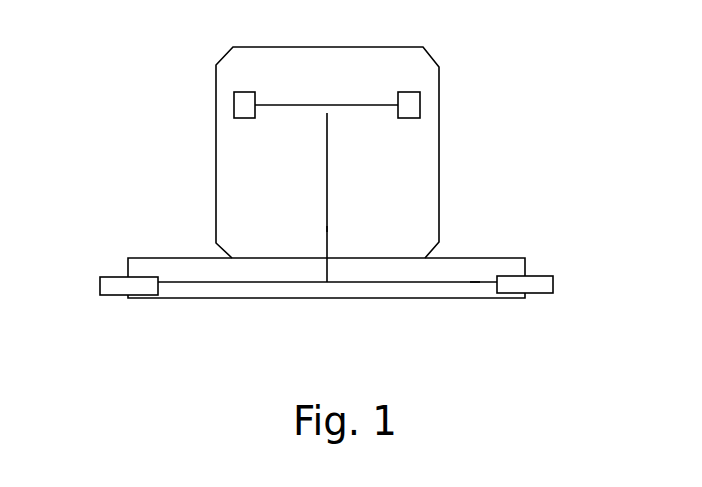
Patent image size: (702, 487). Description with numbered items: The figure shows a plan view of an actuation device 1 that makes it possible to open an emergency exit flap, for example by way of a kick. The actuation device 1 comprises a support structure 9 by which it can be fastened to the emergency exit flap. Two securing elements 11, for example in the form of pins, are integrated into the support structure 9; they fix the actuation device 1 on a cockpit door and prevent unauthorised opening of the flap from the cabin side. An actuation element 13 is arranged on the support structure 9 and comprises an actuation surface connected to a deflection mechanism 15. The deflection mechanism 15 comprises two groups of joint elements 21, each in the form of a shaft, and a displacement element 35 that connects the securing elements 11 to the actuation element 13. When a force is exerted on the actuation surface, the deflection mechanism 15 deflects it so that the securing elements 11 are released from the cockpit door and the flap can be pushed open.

The actuation device 1 is at (503, 112).
The support structure 9 is at (519, 258).
The securing elements 11 is at (100, 285).
The actuation element 13 is at (237, 192).
The deflection mechanism 15 is at (338, 174).
The joint element 21 is at (368, 104).
The displacement element 35 is at (336, 233).